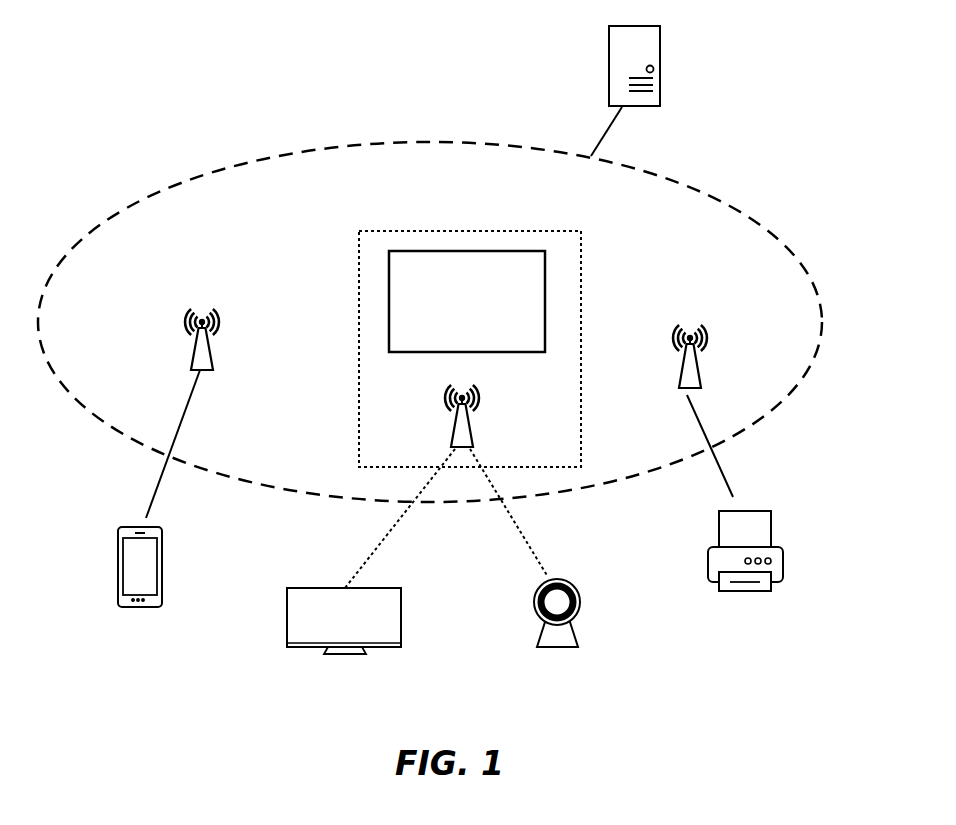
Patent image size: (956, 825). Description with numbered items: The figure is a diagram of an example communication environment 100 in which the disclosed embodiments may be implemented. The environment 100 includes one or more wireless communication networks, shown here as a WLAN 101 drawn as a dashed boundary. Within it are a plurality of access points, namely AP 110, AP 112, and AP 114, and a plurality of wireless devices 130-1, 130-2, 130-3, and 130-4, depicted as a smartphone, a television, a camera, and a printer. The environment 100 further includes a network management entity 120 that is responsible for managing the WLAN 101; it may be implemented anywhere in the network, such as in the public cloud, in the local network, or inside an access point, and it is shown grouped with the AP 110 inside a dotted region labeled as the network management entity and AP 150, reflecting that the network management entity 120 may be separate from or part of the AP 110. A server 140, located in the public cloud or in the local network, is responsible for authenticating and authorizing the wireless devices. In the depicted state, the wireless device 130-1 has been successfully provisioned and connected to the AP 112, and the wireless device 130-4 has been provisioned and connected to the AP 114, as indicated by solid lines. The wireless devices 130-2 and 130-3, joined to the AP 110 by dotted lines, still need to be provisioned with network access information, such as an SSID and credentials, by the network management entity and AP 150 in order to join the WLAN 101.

The example environment 100 is at (220, 96).
The WLAN 101 is at (728, 200).
The AP 110 is at (473, 427).
The AP 112 is at (212, 350).
The AP 114 is at (700, 370).
The network management entity 120 is at (545, 290).
The wireless device 130-1 is at (140, 607).
The wireless device 130-2 is at (358, 662).
The wireless device 130-3 is at (560, 648).
The wireless device 130-4 is at (747, 591).
The server 140 is at (661, 48).
The network management entity and AP 150 is at (520, 231).